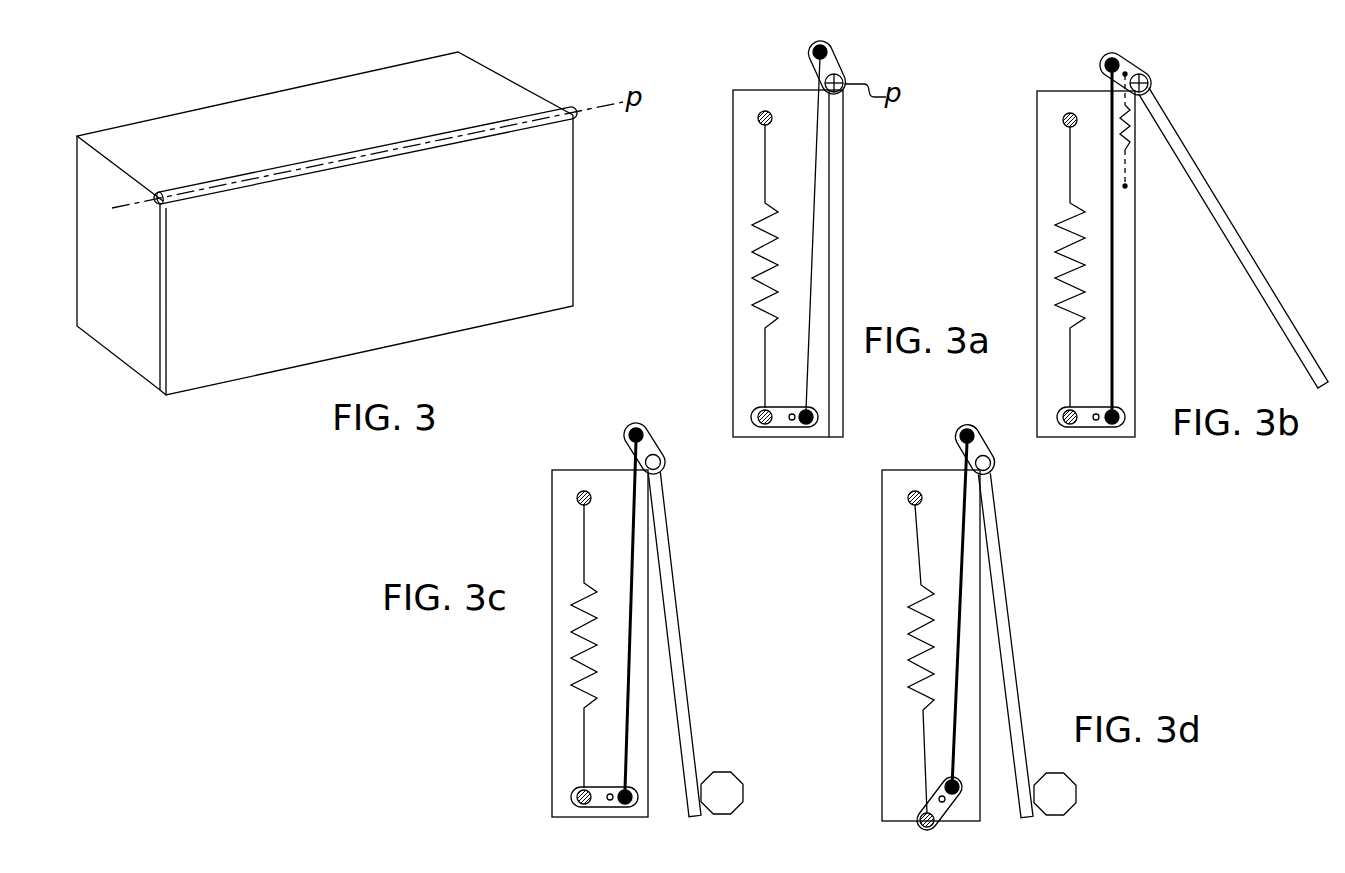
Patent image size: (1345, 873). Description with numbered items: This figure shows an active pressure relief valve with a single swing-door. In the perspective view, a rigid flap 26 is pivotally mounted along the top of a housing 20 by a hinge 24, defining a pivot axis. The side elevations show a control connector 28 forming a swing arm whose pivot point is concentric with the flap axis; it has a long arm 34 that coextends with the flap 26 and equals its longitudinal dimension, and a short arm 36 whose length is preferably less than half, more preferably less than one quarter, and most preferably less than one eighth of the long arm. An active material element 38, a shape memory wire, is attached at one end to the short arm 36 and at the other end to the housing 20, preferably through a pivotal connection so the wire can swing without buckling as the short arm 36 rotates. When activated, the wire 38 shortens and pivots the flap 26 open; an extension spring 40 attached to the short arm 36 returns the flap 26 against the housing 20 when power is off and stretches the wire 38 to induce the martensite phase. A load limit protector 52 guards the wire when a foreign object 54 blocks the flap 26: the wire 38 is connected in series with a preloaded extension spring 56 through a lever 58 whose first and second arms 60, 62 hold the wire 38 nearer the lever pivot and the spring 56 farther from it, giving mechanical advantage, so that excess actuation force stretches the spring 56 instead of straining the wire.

In FIG. 3, the housing 20 is at (326, 132).
In FIG. 3A, the housing 20 is at (733, 187).
In FIG. 3C, the housing 20 is at (552, 643).
In FIG. 3, the hinge 24 is at (575, 109).
In FIG. 3, the rigid flap 26 is at (326, 280).
In FIG. 3A, the rigid flap 26 is at (845, 170).
In FIG. 3C, the rigid flap 26 is at (685, 640).
In FIG. 3A, the control connector 28 is at (847, 41).
In FIG. 3B, the long arm 34 is at (1240, 230).
In FIG. 3B, the short arm 36 is at (1128, 68).
In FIG. 3A, the active material element 38 is at (815, 243).
In FIG. 3B, the active material element 38 is at (1112, 248).
In FIG. 3C, the active material element 38 is at (633, 572).
In FIG. 3D, the active material element 38 is at (964, 571).
In FIG. 3B, the extension spring 40 is at (1128, 125).
In FIG. 3C, the load limit protector 52 is at (545, 761).
In FIG. 3C, the foreign object 54 is at (743, 797).
In FIG. 3A, the extension spring 56 is at (760, 287).
In FIG. 3D, the extension spring 56 is at (920, 647).
In FIG. 3A, the lever 58 is at (743, 409).
In FIG. 3D, the first arm 60 is at (962, 790).
In FIG. 3D, the second arm 62 is at (929, 828).